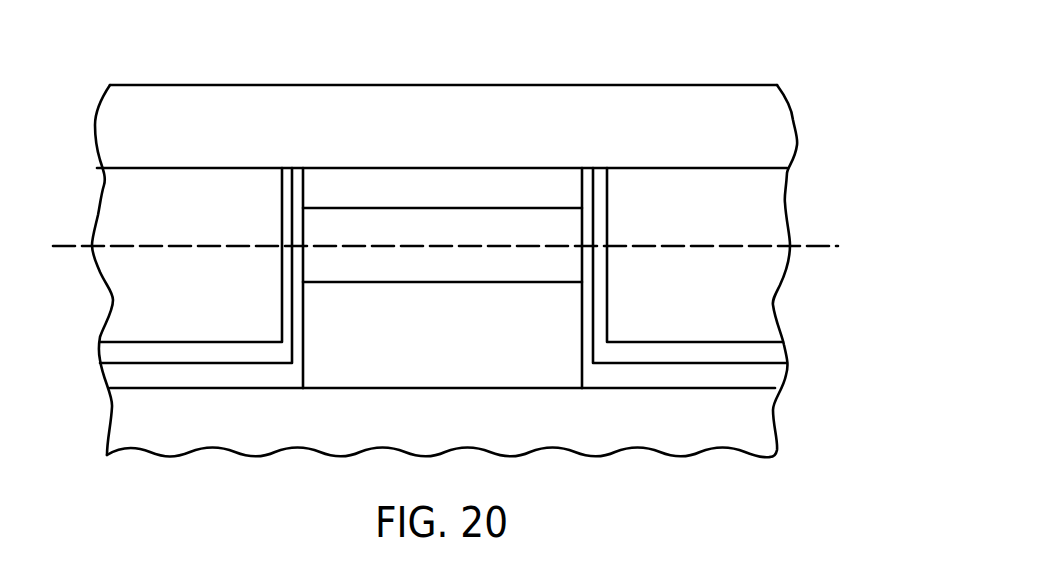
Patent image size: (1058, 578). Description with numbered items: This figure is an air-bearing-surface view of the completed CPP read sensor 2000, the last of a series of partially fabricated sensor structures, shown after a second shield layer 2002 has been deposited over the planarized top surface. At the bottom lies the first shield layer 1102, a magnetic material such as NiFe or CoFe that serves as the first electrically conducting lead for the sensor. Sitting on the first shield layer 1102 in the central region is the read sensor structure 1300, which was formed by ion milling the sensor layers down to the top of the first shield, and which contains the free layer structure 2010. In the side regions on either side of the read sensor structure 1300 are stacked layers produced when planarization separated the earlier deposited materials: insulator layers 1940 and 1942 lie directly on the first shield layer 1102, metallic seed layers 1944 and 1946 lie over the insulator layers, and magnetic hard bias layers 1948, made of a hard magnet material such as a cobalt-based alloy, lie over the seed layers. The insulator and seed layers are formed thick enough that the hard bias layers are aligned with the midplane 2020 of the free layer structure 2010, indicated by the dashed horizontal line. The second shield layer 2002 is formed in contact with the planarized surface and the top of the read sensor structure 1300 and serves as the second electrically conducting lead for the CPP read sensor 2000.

The CPP read sensor 2000 is at (750, 78).
The second shield layer 2002 is at (605, 151).
The read sensor structure 1300 is at (470, 200).
The free layer structure 2010 is at (548, 275).
The magnetic hard bias layer 1948 is at (263, 285).
The metallic seed layer 1944 is at (213, 361).
The insulator layer 1940 is at (213, 385).
The metallic seed layer 1946 is at (723, 361).
The insulator layer 1942 is at (723, 386).
The first shield layer 1102 is at (593, 432).
The midplane 2020 is at (807, 242).